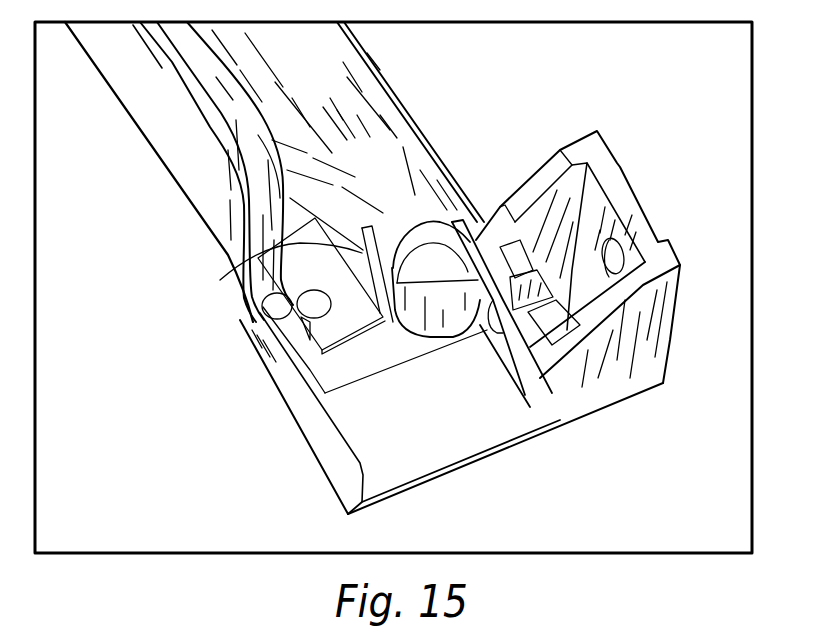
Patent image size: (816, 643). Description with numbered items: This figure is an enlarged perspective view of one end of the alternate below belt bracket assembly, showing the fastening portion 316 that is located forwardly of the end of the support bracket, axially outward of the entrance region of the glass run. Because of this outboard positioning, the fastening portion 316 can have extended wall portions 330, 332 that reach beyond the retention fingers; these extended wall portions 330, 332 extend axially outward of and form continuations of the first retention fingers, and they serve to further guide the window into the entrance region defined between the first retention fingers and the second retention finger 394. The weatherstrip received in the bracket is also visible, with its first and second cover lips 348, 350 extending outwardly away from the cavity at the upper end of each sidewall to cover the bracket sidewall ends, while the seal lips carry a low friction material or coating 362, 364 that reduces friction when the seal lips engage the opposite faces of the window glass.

The fastening portion 316 is at (620, 190).
The extended wall portion 330 is at (405, 490).
The extended wall portion 332 is at (522, 380).
The cover lip 348 is at (198, 101).
The cover lip 350 is at (398, 128).
The low friction material or coating 362 is at (250, 156).
The low friction material or coating 364 is at (318, 103).
The second retention finger 394 is at (263, 312).